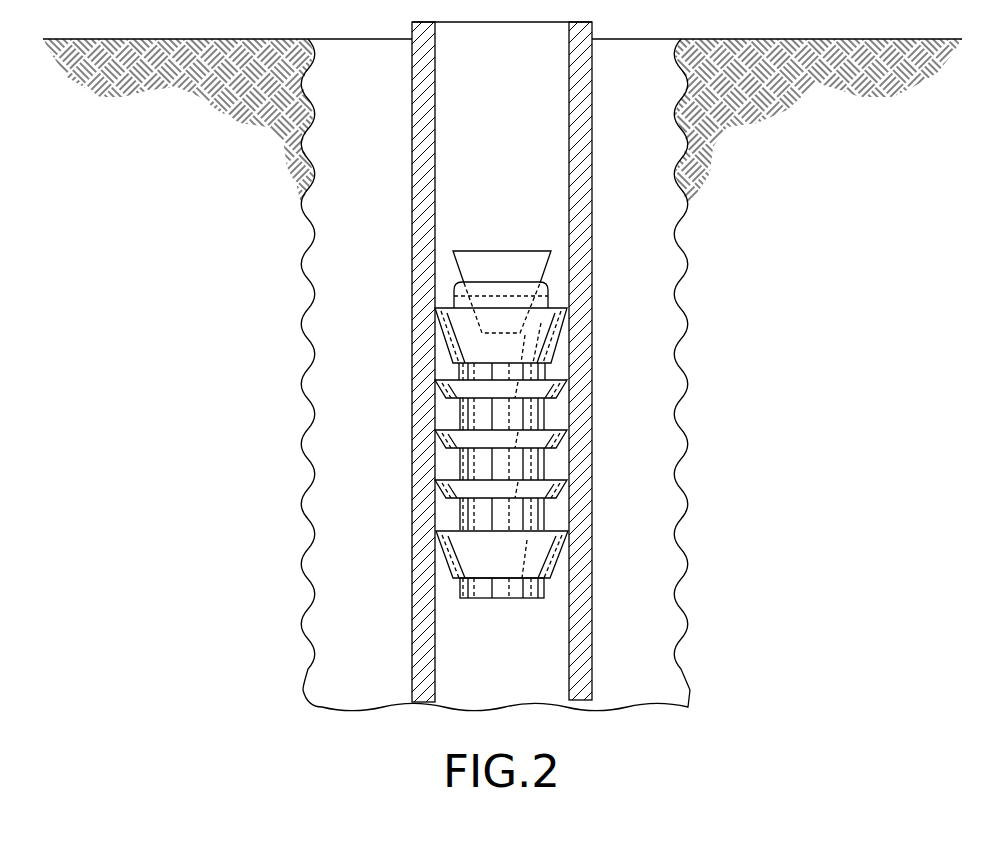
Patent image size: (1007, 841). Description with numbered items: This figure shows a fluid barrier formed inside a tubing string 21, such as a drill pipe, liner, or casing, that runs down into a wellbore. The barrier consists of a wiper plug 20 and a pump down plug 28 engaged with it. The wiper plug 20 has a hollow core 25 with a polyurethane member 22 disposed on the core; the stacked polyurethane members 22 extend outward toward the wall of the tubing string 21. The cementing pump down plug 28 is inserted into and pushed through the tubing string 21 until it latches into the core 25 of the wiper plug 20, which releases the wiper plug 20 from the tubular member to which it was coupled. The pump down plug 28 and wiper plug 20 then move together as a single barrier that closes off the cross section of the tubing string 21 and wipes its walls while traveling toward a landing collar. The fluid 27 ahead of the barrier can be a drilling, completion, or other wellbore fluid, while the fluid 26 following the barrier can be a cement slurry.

The wiper plug 20 is at (635, 453).
The tubing string 21 is at (580, 122).
The polyurethane member 22 is at (548, 345).
The hollow core 25 is at (593, 567).
The fluid following the fluid barrier 26 is at (468, 203).
The fluid ahead of the fluid barrier 27 is at (482, 665).
The pump down plug 28 is at (513, 264).